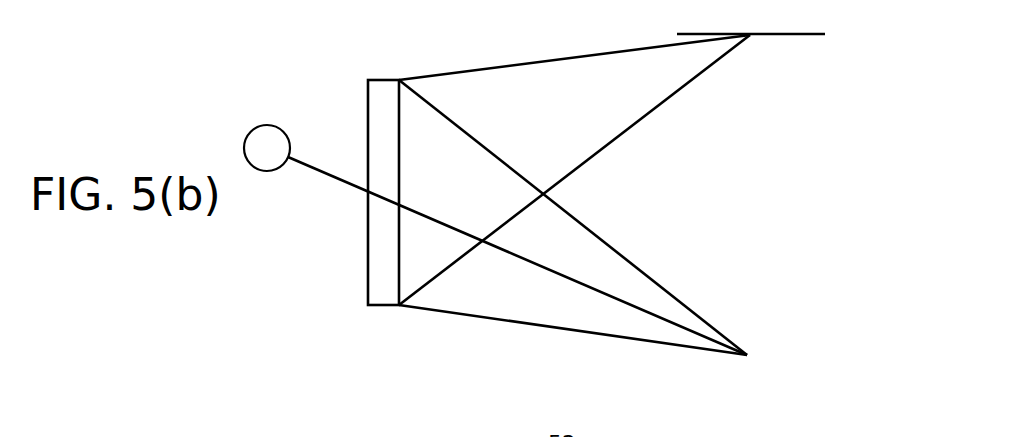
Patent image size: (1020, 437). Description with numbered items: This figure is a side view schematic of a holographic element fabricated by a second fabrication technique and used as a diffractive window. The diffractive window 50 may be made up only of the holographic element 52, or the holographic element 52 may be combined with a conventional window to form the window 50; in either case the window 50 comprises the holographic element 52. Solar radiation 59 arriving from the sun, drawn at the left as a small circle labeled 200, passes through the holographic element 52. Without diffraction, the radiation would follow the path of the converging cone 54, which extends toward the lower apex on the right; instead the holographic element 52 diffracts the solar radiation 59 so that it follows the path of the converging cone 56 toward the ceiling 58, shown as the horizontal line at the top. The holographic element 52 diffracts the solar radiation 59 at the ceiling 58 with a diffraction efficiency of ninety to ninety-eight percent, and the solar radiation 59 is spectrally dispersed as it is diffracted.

The diffractive window 50 is at (383, 307).
The holographic element 52 is at (385, 80).
The converging cone 54 is at (684, 316).
The converging cone 56 is at (686, 77).
The ceiling 58 is at (706, 34).
The solar radiation 59 is at (330, 182).
The observer eye 200 is at (262, 126).